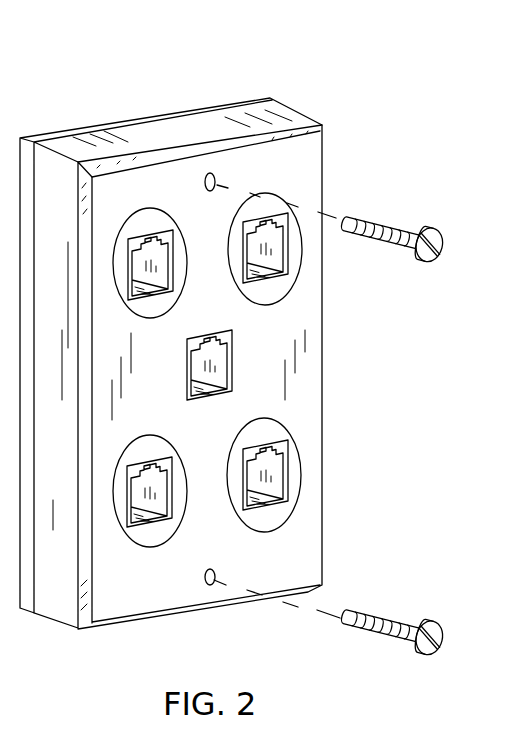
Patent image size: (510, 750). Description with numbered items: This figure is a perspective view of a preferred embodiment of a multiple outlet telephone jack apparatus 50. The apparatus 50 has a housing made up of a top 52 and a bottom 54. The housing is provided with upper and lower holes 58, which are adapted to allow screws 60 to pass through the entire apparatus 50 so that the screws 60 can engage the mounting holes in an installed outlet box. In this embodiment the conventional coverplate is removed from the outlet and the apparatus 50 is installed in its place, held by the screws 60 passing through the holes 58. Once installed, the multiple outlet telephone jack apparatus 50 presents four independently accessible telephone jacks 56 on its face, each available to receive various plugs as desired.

The multiple outlet telephone jack apparatus 50 is at (358, 160).
The top 52 is at (223, 312).
The bottom 54 is at (195, 113).
The telephone jacks 56 is at (277, 467).
The holes 58 is at (210, 586).
The screws 60 is at (370, 614).